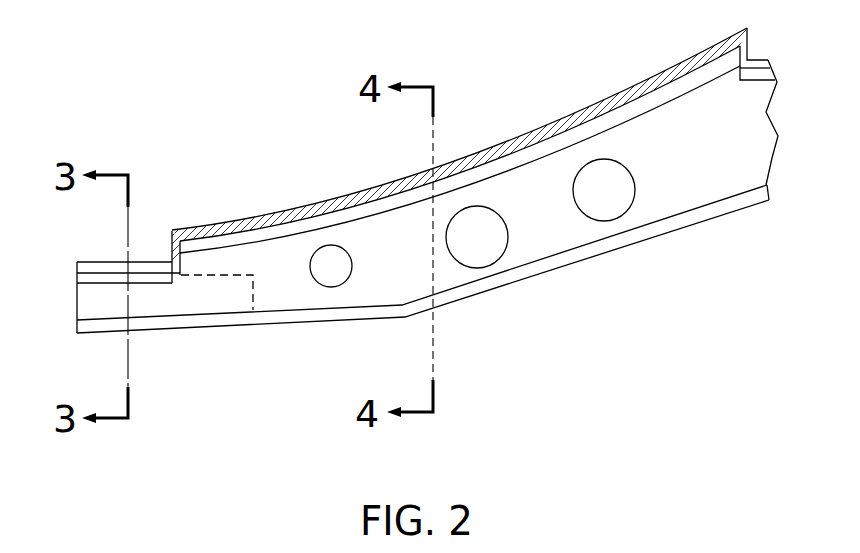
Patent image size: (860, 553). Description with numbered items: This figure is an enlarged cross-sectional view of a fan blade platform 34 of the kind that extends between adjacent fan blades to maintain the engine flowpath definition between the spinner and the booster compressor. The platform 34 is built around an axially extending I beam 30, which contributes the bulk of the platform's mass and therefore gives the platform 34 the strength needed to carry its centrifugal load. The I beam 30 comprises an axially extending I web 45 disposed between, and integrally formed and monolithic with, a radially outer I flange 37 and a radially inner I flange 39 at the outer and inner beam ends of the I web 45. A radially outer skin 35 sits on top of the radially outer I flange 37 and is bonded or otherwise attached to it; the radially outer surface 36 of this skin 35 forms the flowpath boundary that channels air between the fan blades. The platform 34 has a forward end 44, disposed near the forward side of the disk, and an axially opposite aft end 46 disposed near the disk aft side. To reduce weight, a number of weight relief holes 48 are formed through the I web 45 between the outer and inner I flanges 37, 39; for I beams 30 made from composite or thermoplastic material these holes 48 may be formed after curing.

The I beam 30 is at (430, 171).
The platform 34 is at (430, 135).
The radially outer skin 35 is at (528, 132).
The radially outer surface 36 is at (335, 197).
The radially outer I flange 37 is at (695, 85).
The radially inner I flange 39 is at (573, 267).
The forward end 44 is at (77, 273).
The I web 45 is at (778, 133).
The aft end 46 is at (748, 207).
The weight relief holes 48 is at (636, 182).